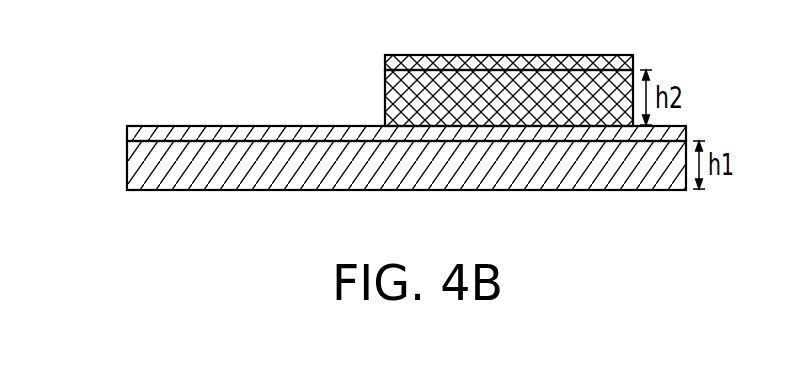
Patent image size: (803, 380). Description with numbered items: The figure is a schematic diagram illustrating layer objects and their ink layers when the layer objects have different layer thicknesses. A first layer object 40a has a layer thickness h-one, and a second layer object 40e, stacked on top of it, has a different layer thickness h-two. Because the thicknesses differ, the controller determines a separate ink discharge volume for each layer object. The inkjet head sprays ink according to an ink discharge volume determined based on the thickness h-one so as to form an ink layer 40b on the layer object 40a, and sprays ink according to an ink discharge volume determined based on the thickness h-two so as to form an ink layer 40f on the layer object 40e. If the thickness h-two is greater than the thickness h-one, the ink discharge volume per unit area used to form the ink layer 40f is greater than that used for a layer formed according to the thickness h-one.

The layer object 40a is at (133, 173).
The ink layer 40b is at (127, 134).
The layer object 40e is at (385, 113).
The ink layer 40f is at (385, 66).